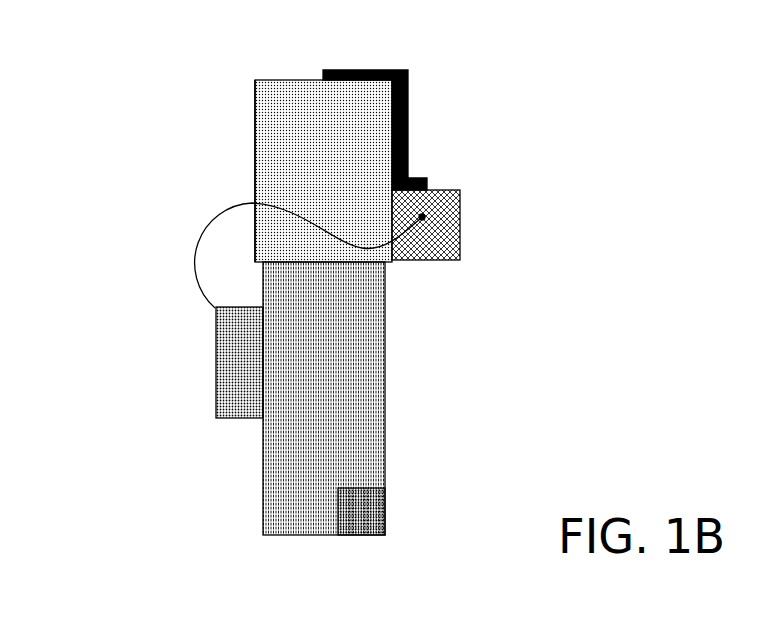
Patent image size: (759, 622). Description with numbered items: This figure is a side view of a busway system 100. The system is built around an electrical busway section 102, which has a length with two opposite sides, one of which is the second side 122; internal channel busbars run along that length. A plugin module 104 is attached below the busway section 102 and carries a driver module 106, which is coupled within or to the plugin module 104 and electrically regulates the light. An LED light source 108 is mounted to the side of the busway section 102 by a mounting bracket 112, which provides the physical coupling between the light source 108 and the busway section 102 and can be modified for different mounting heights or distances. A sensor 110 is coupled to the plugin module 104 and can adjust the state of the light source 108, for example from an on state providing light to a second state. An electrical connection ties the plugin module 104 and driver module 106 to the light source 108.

The busway system 100 is at (140, 75).
The electrical busway section 102 is at (268, 160).
The plugin module 104 is at (385, 370).
The driver module 106 is at (208, 427).
The LED light source 108 is at (462, 218).
The sensor 110 is at (385, 513).
The mounting bracket 112 is at (412, 112).
The second side 122 is at (255, 176).